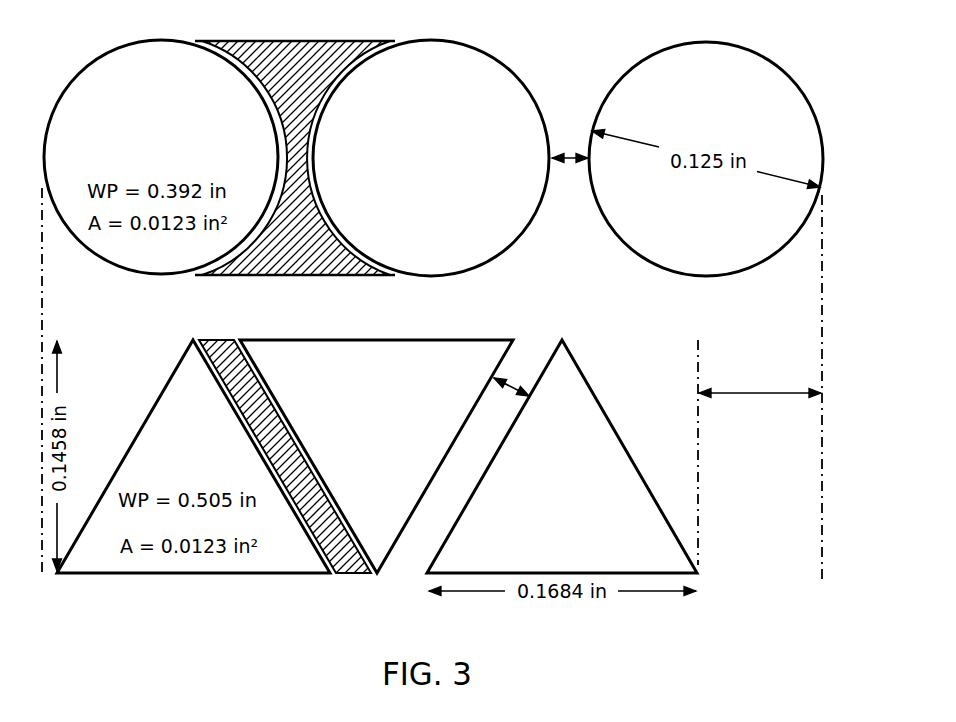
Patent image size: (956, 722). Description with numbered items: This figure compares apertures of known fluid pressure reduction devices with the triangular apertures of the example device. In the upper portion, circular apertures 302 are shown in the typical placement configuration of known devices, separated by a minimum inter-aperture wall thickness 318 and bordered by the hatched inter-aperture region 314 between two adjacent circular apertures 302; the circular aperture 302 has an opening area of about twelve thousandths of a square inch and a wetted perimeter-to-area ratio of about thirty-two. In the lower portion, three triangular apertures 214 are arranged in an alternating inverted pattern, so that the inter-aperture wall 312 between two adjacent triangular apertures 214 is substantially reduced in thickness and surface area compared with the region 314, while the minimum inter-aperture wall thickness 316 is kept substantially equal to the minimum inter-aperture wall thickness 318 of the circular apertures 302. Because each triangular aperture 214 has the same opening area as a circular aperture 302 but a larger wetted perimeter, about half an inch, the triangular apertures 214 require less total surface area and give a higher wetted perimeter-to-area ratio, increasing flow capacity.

The circular aperture 302 is at (168, 55).
The interstitial region between circular strands 314 is at (291, 53).
The minimum inter-aperture wall thickness 318 is at (570, 152).
The triangular aperture 214 is at (185, 365).
The inter-aperture wall 312 is at (219, 345).
The minimum inter-aperture wall thickness 316 is at (512, 383).